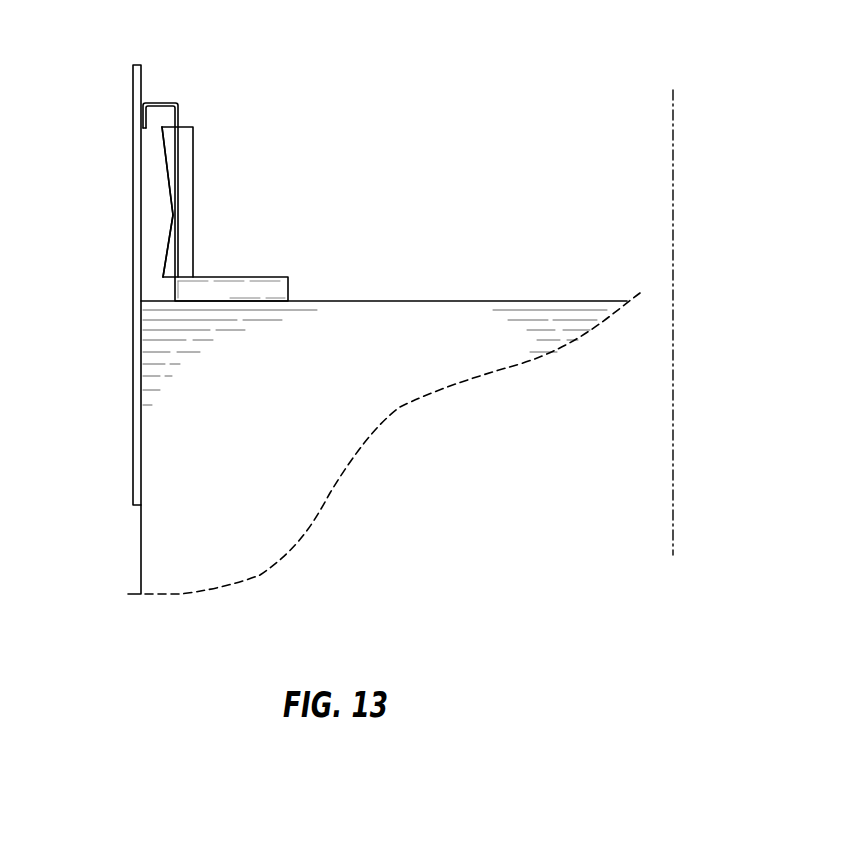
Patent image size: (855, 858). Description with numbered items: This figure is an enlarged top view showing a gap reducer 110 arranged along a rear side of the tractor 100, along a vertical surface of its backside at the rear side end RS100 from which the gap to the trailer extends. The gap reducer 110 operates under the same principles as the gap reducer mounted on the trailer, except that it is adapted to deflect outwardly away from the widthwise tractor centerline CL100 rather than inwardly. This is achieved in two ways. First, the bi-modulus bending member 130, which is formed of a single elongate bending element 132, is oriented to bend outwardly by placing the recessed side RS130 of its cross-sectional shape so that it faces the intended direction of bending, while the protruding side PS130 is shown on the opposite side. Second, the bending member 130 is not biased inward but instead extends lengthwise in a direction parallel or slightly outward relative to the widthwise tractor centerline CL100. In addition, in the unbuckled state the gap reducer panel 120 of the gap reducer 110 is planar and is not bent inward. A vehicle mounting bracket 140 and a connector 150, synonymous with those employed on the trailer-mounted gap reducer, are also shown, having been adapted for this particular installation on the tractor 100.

The tractor 100 is at (320, 470).
The gap reducer 110 is at (393, 182).
The gap reducer panel 120 is at (132, 94).
The bi-modulus bending member 130 is at (193, 131).
The elongate bending element 132 is at (167, 202).
The vehicle mounting bracket 140 is at (290, 290).
The connector 150 is at (152, 99).
The recessed side RS130 is at (173, 203).
The protruding side PS130 is at (193, 207).
The rear side end RS100 is at (512, 301).
The widthwise tractor centerline CL100 is at (674, 228).